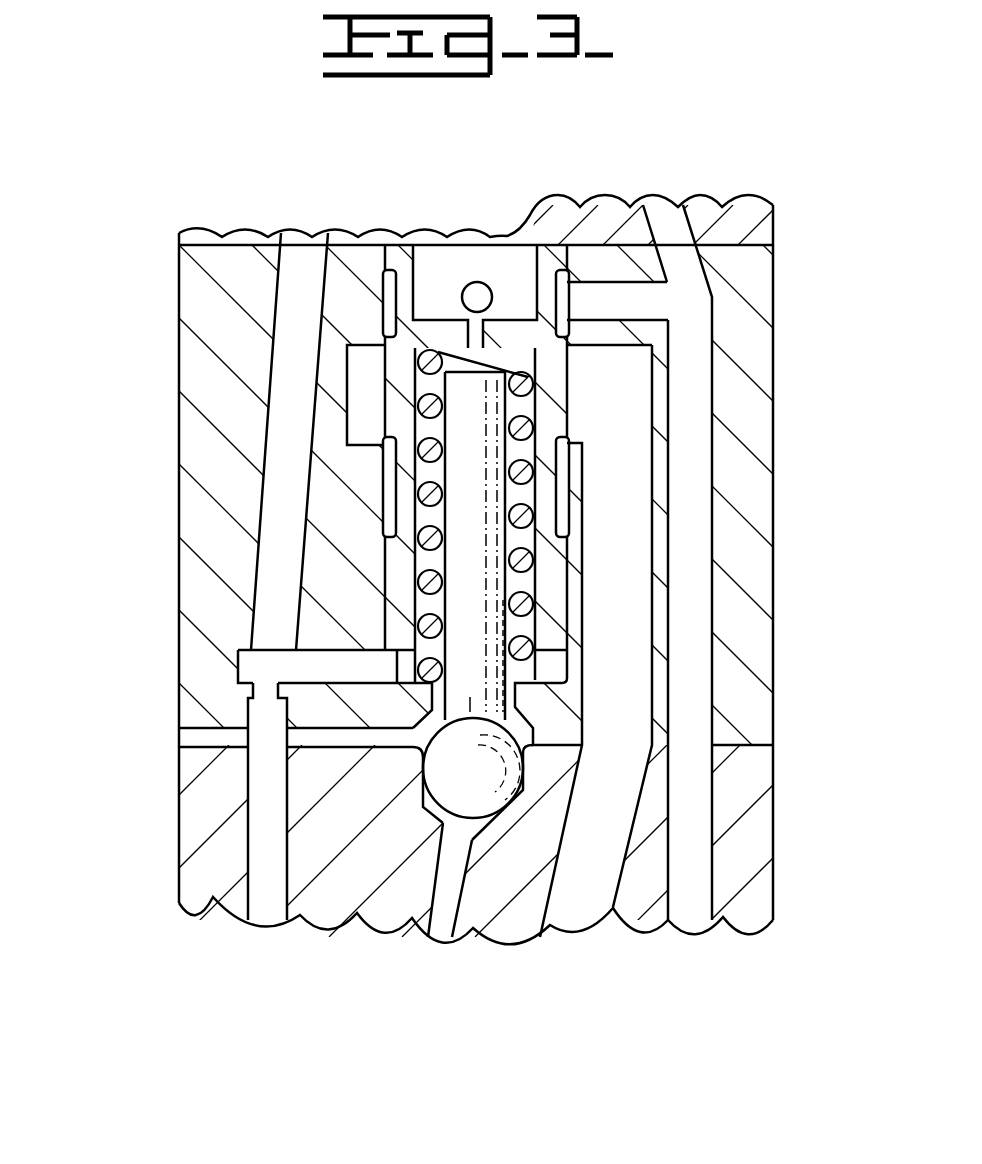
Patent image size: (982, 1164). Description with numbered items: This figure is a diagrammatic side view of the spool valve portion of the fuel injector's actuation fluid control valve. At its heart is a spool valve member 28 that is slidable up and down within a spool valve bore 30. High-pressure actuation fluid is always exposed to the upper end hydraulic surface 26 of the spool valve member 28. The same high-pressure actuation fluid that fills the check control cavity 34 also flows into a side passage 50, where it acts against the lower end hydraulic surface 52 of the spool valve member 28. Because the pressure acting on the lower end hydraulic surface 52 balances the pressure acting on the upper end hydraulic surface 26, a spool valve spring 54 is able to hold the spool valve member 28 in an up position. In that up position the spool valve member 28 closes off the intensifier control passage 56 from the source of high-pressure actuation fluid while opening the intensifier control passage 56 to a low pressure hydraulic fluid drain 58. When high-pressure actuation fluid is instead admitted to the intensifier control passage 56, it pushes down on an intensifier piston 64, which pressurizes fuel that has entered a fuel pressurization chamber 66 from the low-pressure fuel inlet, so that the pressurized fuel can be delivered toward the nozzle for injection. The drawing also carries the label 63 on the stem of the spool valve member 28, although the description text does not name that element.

The upper end hydraulic surface 26 is at (512, 308).
The spool valve member 28 is at (557, 397).
The spool valve bore 30 is at (563, 357).
The check control cavity 34 is at (300, 322).
The side passage 50 is at (387, 677).
The lower end hydraulic surface 52 is at (400, 660).
The spool valve spring 54 is at (535, 568).
The intensifier control passage 56 is at (613, 597).
The low pressure hydraulic fluid drain 58 is at (390, 470).
The valve stem 63 is at (480, 495).
The intensifier piston 64 is at (455, 765).
The fuel pressurization chamber 66 is at (442, 900).